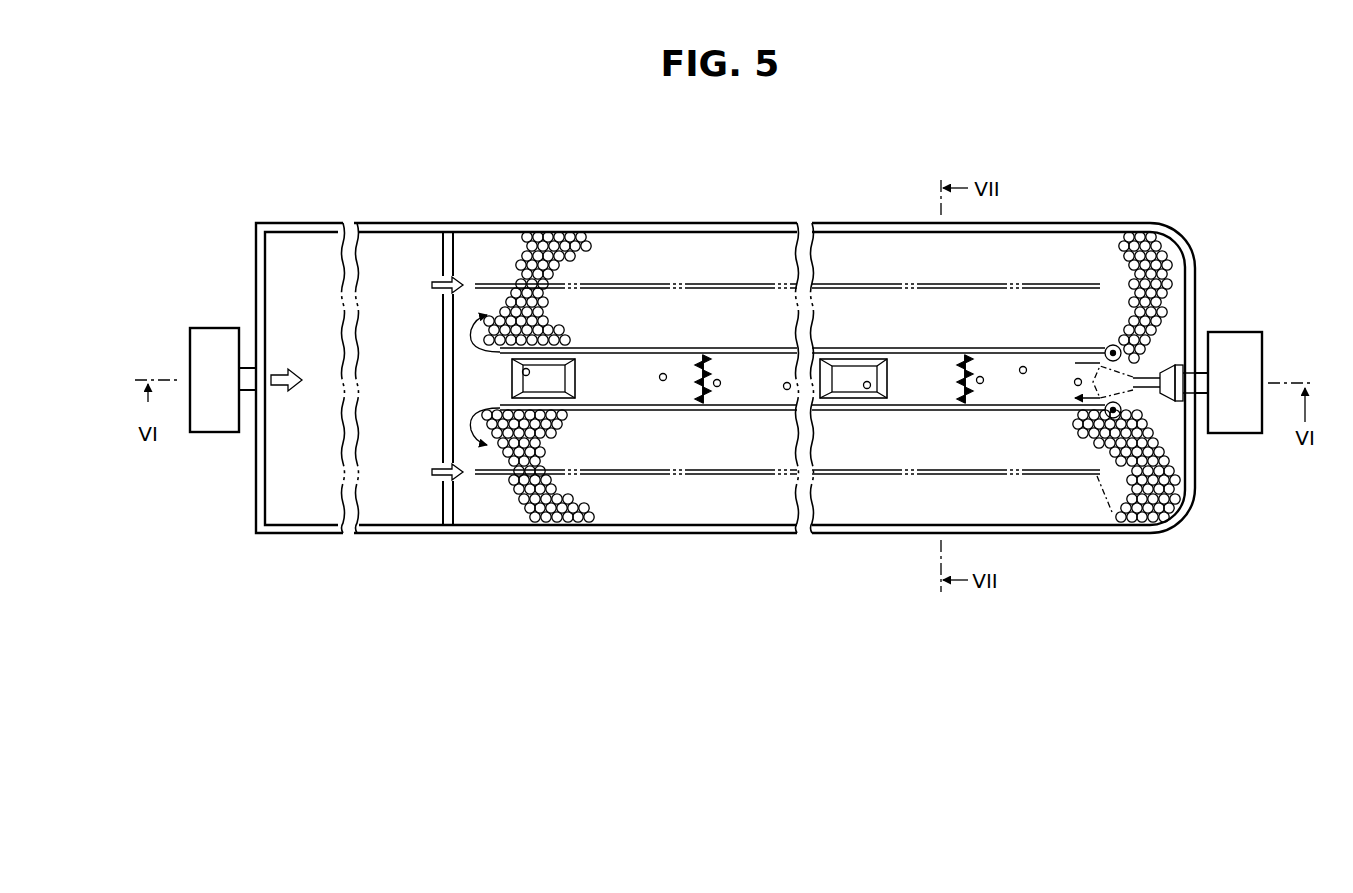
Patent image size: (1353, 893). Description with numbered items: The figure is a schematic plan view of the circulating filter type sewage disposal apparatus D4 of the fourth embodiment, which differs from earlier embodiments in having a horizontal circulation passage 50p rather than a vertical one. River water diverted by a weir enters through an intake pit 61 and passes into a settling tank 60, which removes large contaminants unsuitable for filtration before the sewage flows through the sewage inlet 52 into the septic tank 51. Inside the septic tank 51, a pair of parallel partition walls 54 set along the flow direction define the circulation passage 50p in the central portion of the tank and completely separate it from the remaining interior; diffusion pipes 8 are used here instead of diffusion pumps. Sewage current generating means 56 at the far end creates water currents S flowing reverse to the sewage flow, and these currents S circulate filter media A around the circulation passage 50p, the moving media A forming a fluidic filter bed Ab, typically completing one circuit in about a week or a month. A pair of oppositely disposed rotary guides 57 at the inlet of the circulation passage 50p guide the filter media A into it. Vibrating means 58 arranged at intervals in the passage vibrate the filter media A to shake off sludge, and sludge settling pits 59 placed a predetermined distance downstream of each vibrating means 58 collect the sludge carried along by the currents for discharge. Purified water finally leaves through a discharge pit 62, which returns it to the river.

The diffusion pipe 8 is at (849, 283).
The horizontal circulation passage 50p is at (905, 392).
The septic tank 51 is at (759, 222).
The sewage inlet 52 is at (442, 280).
The partition wall 54 is at (1000, 346).
The sewage current generating means 56 is at (1183, 410).
The rotary guide 57 is at (1126, 345).
The vibrating means 58 is at (700, 398).
The sludge settling pit 59 is at (575, 392).
The settling tank 60 is at (312, 508).
The intake pit 61 is at (226, 432).
The discharge pit 62 is at (1240, 337).
The filter media A is at (562, 263).
The fluidic filter bed Ab is at (522, 256).
The water currents S is at (482, 408).
The circulating filter type sewage disposal apparatus D4 is at (548, 192).